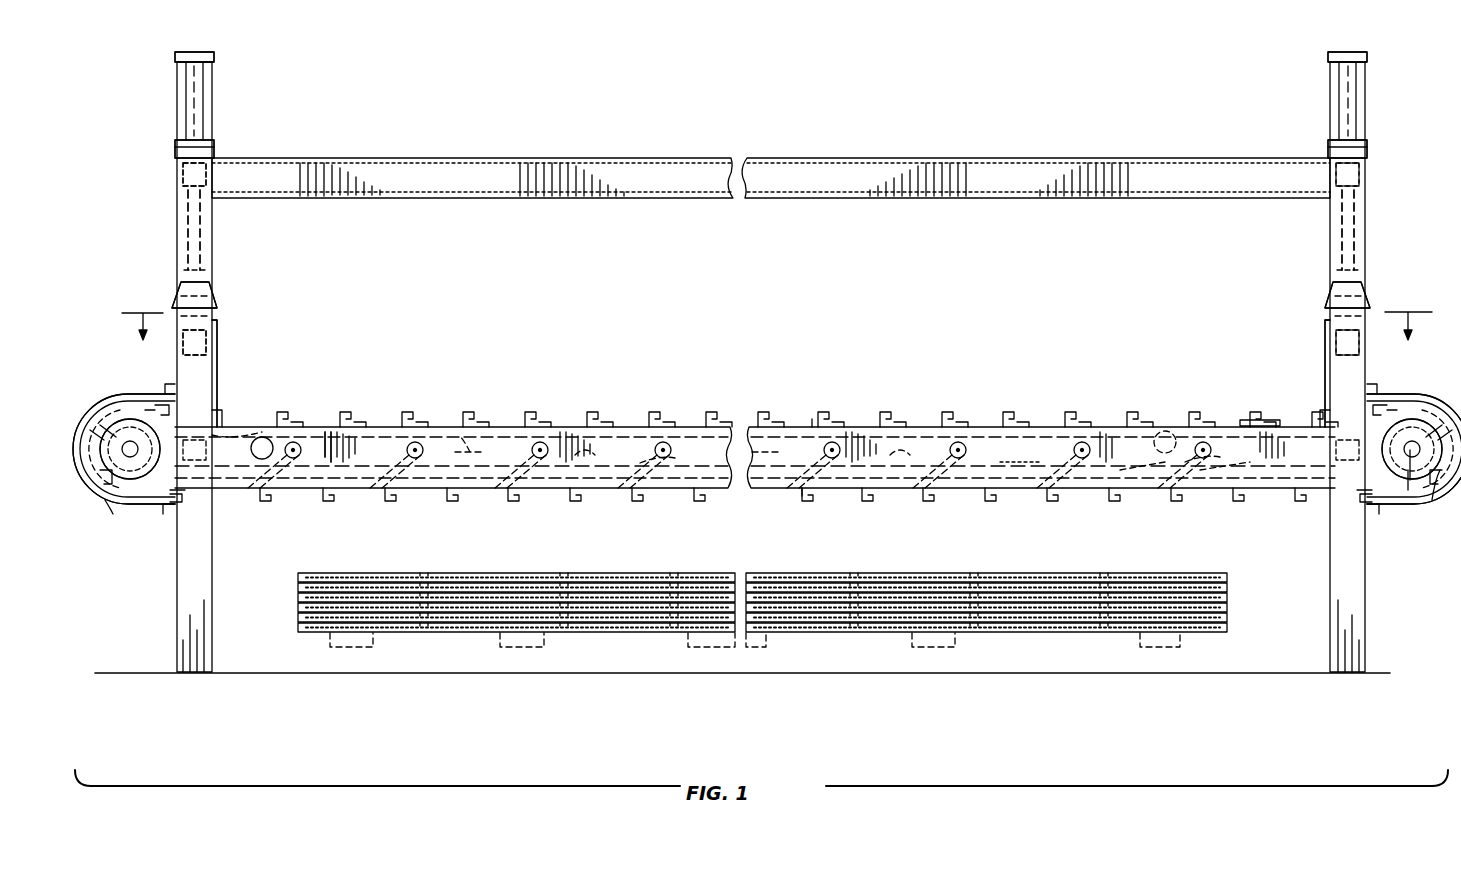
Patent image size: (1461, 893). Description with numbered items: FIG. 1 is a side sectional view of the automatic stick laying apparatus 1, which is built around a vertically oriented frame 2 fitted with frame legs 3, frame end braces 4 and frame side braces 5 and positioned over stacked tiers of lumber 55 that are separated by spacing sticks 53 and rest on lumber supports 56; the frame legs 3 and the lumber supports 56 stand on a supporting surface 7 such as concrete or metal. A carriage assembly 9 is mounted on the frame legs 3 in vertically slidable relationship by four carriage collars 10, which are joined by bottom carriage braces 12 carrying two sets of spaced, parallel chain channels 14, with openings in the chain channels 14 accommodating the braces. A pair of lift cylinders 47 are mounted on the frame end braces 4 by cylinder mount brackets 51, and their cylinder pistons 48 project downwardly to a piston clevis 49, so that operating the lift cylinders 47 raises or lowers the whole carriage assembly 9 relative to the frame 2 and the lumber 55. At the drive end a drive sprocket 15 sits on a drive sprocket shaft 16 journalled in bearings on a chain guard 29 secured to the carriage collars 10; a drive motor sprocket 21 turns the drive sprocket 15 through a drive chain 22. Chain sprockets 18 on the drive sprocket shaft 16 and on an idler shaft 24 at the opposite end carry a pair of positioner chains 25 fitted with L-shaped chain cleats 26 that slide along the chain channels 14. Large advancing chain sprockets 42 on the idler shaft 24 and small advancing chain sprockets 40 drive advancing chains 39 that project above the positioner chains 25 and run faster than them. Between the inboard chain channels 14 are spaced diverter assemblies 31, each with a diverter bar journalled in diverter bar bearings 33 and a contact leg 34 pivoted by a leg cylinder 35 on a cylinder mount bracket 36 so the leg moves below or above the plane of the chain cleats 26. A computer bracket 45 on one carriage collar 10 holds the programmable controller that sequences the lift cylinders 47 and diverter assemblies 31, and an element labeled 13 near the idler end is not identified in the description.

The stick laying apparatus 1 is at (1118, 62).
The frame 2 is at (936, 118).
The frame legs 3 is at (213, 256).
The frame end braces 4 is at (177, 200).
The frame side braces 5 is at (1134, 156).
The supporting surface 7 is at (258, 652).
The carriage assembly 9 is at (216, 368).
The carriage collars 10 is at (220, 328).
The bottom carriage braces 12 is at (230, 495).
The drive shaft 13 is at (1440, 502).
The chain channels 14 is at (379, 451).
The drive sprocket 15 is at (124, 400).
The drive sprocket shaft 16 is at (124, 498).
The chain sprockets 18 is at (130, 420).
The drive motor sprocket 21 is at (265, 437).
The drive chain 22 is at (237, 430).
The idler shaft 24 is at (1408, 492).
The positioner chains 25 is at (822, 425).
The chain cleats 26 is at (472, 412).
The chain guard 29 is at (152, 518).
The diverter assemblies 31 is at (1135, 490).
The diverter bar bearings 33 is at (669, 448).
The contact leg 34 is at (578, 455).
The leg cylinder 35 is at (490, 495).
The cylinder mount bracket 36 is at (464, 452).
The advancing chains 39 is at (1254, 420).
The small advancing chain sprockets 40 is at (1155, 430).
The large advancing chain sprockets 42 is at (1415, 470).
The computer bracket 45 is at (203, 234).
The lift cylinders 47 is at (215, 97).
The cylinder pistons 48 is at (1342, 250).
The piston clevis 49 is at (216, 303).
The cylinder mount brackets 51 is at (214, 155).
The spacing sticks 53 is at (340, 414).
The lumber 55 is at (456, 588).
The lumber supports 56 is at (687, 642).